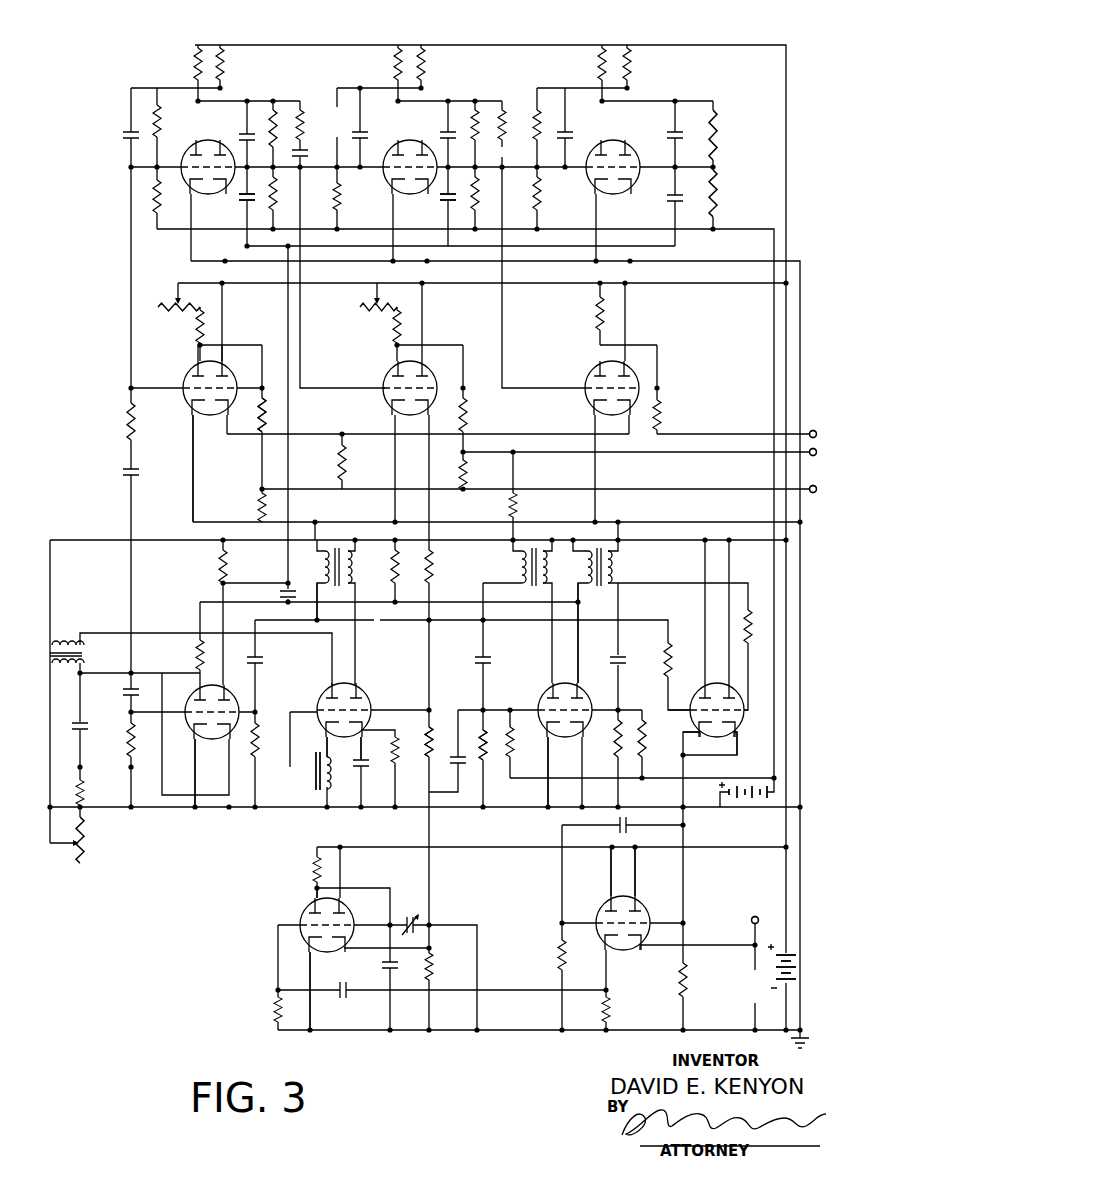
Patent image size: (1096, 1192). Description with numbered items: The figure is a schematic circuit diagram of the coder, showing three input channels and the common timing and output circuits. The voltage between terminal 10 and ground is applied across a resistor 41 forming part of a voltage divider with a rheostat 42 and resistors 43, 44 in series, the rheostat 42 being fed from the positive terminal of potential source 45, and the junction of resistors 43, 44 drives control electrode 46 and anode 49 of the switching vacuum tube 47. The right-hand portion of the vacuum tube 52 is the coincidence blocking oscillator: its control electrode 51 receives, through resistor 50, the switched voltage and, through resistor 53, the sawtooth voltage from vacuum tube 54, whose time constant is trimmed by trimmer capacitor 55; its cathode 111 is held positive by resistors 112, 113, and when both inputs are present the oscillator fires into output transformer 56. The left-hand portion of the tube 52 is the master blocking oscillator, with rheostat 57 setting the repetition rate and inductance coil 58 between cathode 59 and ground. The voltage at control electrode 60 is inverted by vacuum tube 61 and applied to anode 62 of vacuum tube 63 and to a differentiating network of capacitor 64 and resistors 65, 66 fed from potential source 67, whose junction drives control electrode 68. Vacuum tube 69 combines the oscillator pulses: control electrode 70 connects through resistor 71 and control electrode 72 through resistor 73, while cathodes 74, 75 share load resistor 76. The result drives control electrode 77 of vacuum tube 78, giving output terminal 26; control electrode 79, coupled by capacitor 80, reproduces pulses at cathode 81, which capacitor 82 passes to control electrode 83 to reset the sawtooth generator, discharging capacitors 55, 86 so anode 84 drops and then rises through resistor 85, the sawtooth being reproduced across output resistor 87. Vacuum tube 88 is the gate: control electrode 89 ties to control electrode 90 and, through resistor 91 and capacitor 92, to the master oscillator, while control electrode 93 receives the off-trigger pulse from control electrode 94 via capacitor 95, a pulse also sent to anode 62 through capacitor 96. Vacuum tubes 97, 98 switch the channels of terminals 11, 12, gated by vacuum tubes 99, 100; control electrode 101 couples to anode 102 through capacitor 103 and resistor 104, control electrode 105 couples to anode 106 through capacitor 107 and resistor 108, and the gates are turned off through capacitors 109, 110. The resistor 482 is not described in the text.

The terminal 10 is at (813, 493).
The terminal 11 is at (813, 456).
The terminal 12 is at (813, 430).
The output terminal 26 is at (756, 916).
The resistor 41 is at (257, 513).
The rheostat 42 is at (170, 310).
The resistor 43 is at (196, 332).
The resistor 44 is at (256, 425).
The potential source 45 is at (800, 966).
The control electrode 46 is at (230, 378).
The vacuum tube 47 is at (212, 420).
The resistor 482 is at (340, 462).
The anode 49 is at (194, 372).
The resistor 50 is at (434, 572).
The control electrode 51 is at (362, 700).
The vacuum tube 52 is at (346, 740).
The resistor 53 is at (436, 720).
The vacuum tube 54 is at (322, 950).
The trimmer capacitor 55 is at (407, 915).
The output transformer 56 is at (328, 590).
The rheostat 57 is at (86, 845).
The inductance coil 58 is at (312, 777).
The cathode 59 is at (322, 738).
The control electrode 60 is at (306, 706).
The vacuum tube 61 is at (212, 738).
The anode 62 is at (582, 693).
The vacuum tube 63 is at (563, 738).
The capacitor 64 is at (461, 766).
The resistor 65 is at (490, 765).
The resistor 66 is at (512, 745).
The potential source 67 is at (745, 802).
The control electrode 68 is at (536, 698).
The vacuum tube 69 is at (717, 718).
The control electrode 70 is at (684, 714).
The resistor 71 is at (672, 648).
The control electrode 72 is at (740, 712).
The resistor 73 is at (748, 608).
The cathode 74 is at (694, 734).
The cathode 75 is at (738, 735).
The load resistor 76 is at (688, 981).
The control electrode 77 is at (642, 914).
The vacuum tube 78 is at (628, 947).
The control electrode 79 is at (605, 912).
The capacitor 80 is at (630, 822).
The cathode 81 is at (600, 946).
The capacitor 82 is at (344, 996).
The control electrode 83 is at (300, 924).
The anode 84 is at (315, 895).
The resistor 85 is at (312, 870).
The capacitor 86 is at (398, 968).
The output resistor 87 is at (434, 966).
The vacuum tube 88 is at (207, 195).
The control electrode 89 is at (186, 176).
The control electrode 90 is at (195, 395).
The resistor 91 is at (125, 420).
The capacitor 92 is at (125, 478).
The control electrode 93 is at (244, 134).
The control electrode 94 is at (226, 696).
The capacitor 95 is at (252, 205).
The capacitor 96 is at (292, 590).
The vacuum tube 97 is at (392, 400).
The vacuum tube 98 is at (588, 403).
The vacuum tube 99 is at (408, 195).
The vacuum tube 100 is at (611, 195).
The control electrode 101 is at (388, 176).
The anode 102 is at (192, 150).
The capacitor 103 is at (310, 158).
The resistor 104 is at (304, 110).
The control electrode 105 is at (591, 176).
The anode 106 is at (362, 134).
The capacitor 107 is at (502, 152).
The resistor 108 is at (504, 108).
The capacitor 109 is at (452, 200).
The capacitor 110 is at (668, 199).
The cathode 111 is at (150, 202).
The resistor 112 is at (392, 575).
The resistor 113 is at (399, 762).